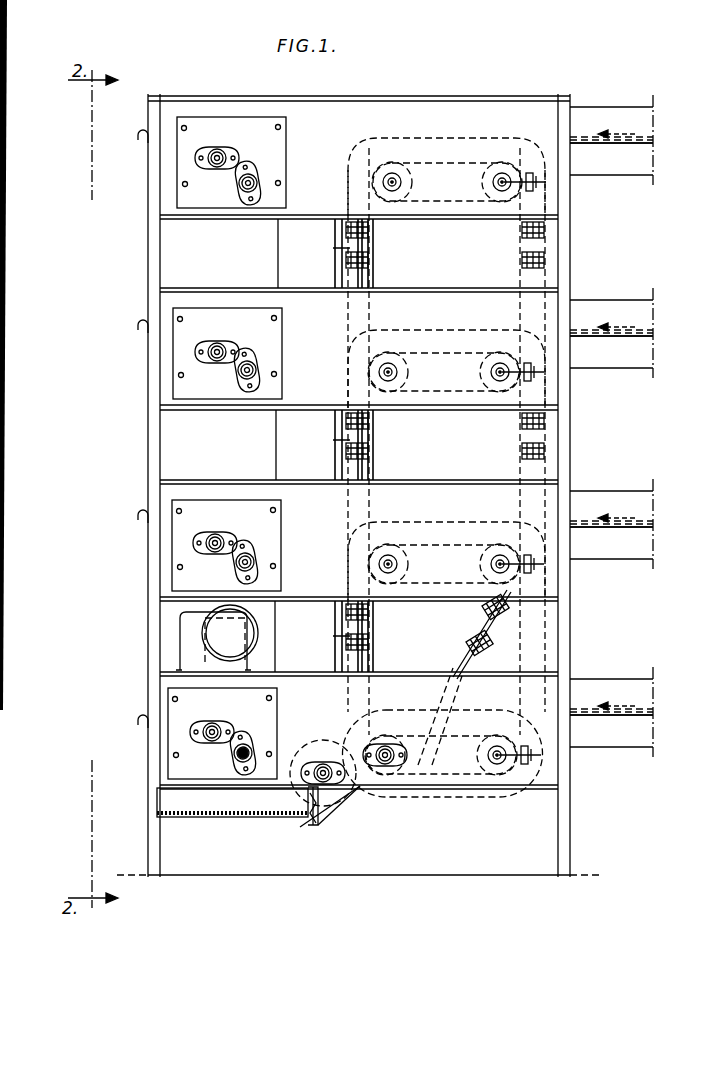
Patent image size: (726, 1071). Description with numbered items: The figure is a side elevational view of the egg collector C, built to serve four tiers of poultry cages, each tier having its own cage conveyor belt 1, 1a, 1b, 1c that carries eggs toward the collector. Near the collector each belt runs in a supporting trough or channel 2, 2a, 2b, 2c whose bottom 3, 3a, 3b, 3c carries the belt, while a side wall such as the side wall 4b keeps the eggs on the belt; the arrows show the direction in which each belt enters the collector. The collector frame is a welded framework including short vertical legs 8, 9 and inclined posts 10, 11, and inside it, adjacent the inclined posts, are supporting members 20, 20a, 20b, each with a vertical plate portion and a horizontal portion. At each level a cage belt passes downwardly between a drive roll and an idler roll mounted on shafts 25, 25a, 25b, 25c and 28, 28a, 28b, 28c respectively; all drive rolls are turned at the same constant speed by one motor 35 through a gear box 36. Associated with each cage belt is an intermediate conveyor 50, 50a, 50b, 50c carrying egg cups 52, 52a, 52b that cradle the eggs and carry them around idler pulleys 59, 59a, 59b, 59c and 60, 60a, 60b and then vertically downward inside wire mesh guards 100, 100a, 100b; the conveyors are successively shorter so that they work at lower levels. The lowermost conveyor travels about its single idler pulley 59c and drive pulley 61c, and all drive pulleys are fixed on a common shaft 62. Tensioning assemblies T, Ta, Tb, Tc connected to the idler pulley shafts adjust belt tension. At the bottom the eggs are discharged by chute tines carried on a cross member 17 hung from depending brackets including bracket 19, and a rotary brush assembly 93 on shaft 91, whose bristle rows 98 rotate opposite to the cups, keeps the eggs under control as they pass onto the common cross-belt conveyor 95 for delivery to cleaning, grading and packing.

The cage conveyor belt 1 is at (648, 138).
The cage conveyor belt 1a is at (642, 330).
The cage conveyor belt 1b is at (642, 520).
The cage conveyor belt 1c is at (642, 710).
The supporting trough or channel 2 is at (628, 108).
The supporting trough or channel 2a is at (608, 300).
The supporting trough or channel 2b is at (600, 492).
The supporting trough or channel 2c is at (605, 680).
The channel bottom 3 is at (622, 142).
The channel bottom 3a is at (632, 338).
The channel bottom 3b is at (636, 528).
The channel bottom 3c is at (636, 718).
The side wall 4b is at (588, 118).
The short vertical leg 8 is at (566, 852).
The short vertical leg 9 is at (152, 837).
The inclined post 10 is at (565, 414).
The inclined post 11 is at (160, 410).
The cross member 17 is at (317, 827).
The depending bracket 19 is at (362, 790).
The supporting member 20 is at (352, 101).
The supporting member 20a is at (178, 298).
The supporting member 20b is at (180, 492).
The drive roll shaft 25 is at (219, 151).
The drive roll shaft 25a is at (219, 345).
The drive roll shaft 25b is at (217, 537).
The drive roll shaft 25c is at (214, 725).
The idler roll shaft 28 is at (242, 188).
The idler roll shaft 28a is at (240, 378).
The idler roll shaft 28b is at (234, 569).
The idler roll shaft 28c is at (232, 760).
The motor 35 is at (230, 633).
The gear box 36 is at (190, 635).
The intermediate conveyor 50 is at (440, 160).
The intermediate conveyor 50a is at (418, 352).
The intermediate conveyor 50b is at (432, 542).
The intermediate conveyor 50c is at (443, 777).
The egg cup 52 is at (369, 238).
The egg cup 52a is at (369, 436).
The egg cup 52b is at (369, 625).
The idler pulley 59 is at (486, 186).
The idler pulley 59a is at (483, 379).
The idler pulley 59b is at (477, 564).
The idler pulley 59c is at (478, 720).
The idler pulley 60 is at (410, 182).
The idler pulley 60a is at (409, 372).
The idler pulley 60b is at (406, 569).
The drive pulley 61c is at (402, 733).
The common shaft 62 is at (385, 766).
The brush shaft 91 is at (323, 763).
The rotary brush assembly 93 is at (287, 816).
The cross-belt conveyor 95 is at (210, 813).
The bristle rows 98 is at (298, 790).
The wire mesh guard 100 is at (335, 262).
The wire mesh guard 100a is at (335, 433).
The wire mesh guard 100b is at (335, 642).
The tensioning assembly T is at (521, 181).
The tensioning assembly Ta is at (508, 368).
The tensioning assembly Tb is at (507, 563).
The tensioning assembly Tc is at (512, 762).
The egg collector C is at (413, 86).